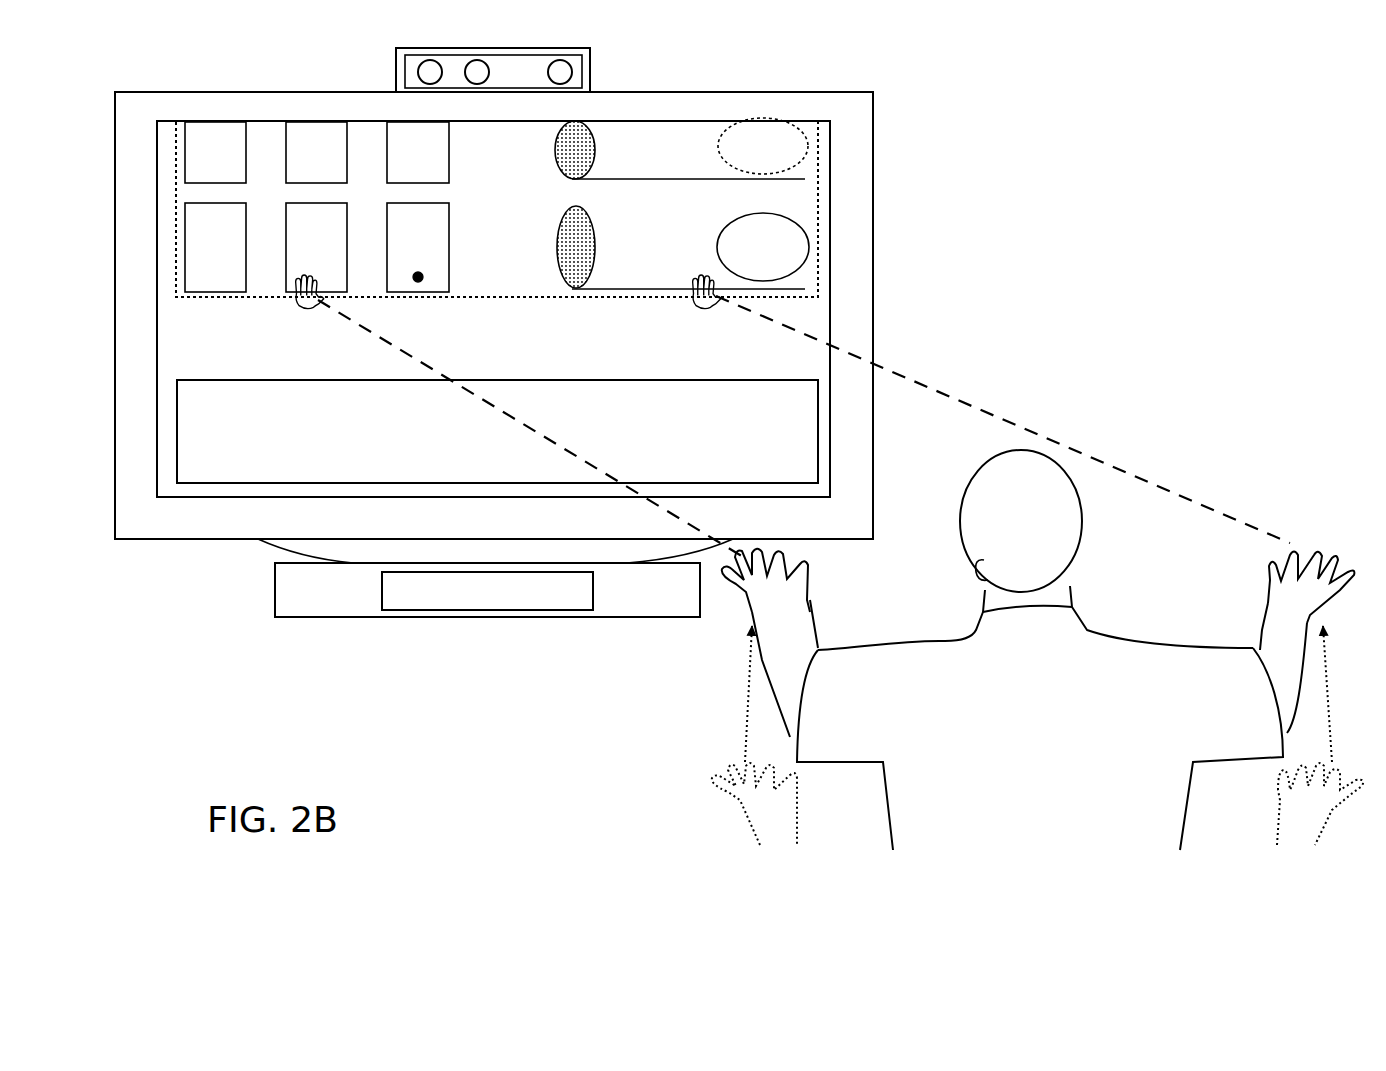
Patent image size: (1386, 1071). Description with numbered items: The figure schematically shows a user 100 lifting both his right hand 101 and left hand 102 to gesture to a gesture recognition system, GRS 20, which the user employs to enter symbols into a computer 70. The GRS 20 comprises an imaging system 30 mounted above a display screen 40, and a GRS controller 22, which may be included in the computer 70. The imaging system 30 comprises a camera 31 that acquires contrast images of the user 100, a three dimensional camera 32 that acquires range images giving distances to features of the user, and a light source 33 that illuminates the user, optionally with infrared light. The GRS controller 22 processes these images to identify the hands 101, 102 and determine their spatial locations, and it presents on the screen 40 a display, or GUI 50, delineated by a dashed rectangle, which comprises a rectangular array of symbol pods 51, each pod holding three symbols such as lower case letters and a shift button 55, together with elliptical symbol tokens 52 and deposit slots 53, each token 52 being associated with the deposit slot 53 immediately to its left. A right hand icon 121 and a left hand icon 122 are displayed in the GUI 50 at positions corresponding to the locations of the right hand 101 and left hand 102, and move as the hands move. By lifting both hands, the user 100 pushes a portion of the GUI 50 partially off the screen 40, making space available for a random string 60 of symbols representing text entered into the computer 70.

The GRS 20 is at (1132, 167).
The imaging system 30 is at (396, 50).
The camera 31 is at (418, 74).
The 3D camera 32 is at (489, 72).
The light source 33 is at (572, 72).
The display screen 40 is at (873, 248).
The display (graphical user interface, GUI) 50 is at (818, 200).
The symbol pods 51 is at (287, 268).
The symbol tokens 52 is at (723, 160).
The deposit slots 53 is at (596, 144).
The shift button 55 is at (423, 277).
The random string of symbols 60 is at (818, 418).
The computer 70 is at (540, 618).
The GRS controller 22 is at (396, 611).
The user 100 is at (1200, 436).
The right hand 101 is at (1285, 606).
The left hand 102 is at (800, 612).
The right hand icon 121 is at (705, 310).
The left hand icon 122 is at (310, 310).